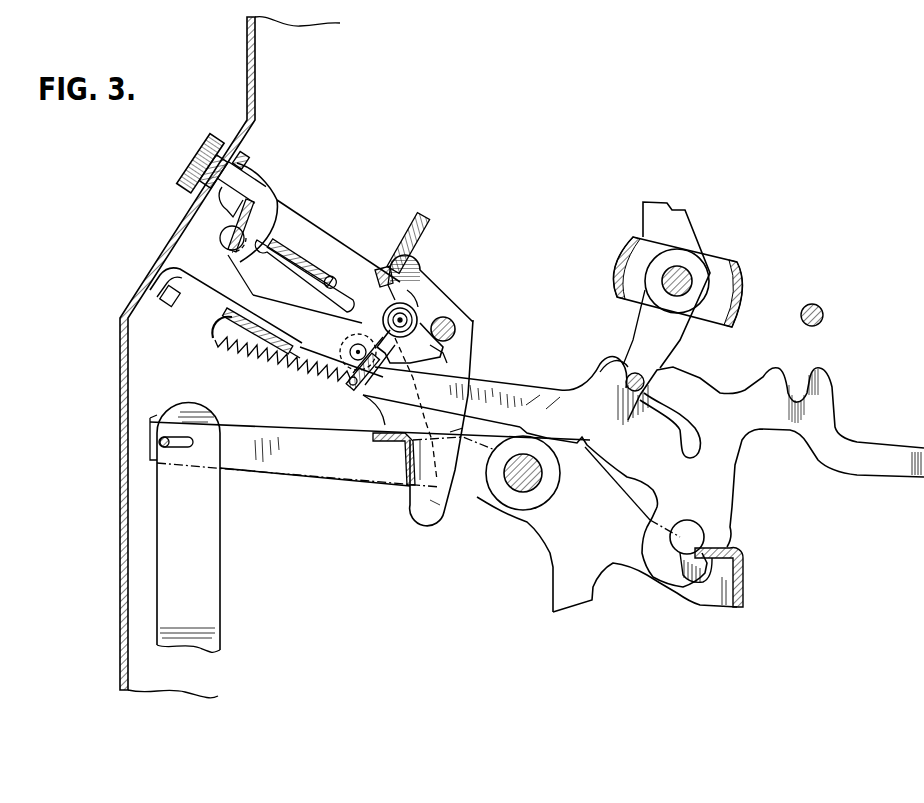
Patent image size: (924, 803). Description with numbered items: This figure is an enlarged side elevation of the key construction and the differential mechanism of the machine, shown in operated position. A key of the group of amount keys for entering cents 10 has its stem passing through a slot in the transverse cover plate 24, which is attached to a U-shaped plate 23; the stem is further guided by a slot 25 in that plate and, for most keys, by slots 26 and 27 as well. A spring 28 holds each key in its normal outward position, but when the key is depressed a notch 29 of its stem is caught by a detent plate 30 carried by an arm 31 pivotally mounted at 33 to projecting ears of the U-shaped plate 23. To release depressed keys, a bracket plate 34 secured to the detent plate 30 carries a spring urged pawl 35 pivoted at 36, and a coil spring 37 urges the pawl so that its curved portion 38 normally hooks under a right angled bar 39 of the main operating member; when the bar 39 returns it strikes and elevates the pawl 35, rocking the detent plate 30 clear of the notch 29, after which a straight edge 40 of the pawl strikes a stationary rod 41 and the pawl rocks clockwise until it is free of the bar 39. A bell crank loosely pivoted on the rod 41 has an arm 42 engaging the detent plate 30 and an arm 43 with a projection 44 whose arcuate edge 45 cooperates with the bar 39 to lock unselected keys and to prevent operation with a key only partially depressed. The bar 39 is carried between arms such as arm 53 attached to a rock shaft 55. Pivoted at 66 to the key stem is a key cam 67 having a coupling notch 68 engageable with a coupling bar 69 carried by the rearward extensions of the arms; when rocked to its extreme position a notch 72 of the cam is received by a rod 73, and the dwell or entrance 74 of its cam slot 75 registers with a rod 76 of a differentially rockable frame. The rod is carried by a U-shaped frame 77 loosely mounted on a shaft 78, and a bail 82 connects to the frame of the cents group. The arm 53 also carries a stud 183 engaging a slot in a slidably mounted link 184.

The group of amount keys for entering cents 10 is at (205, 162).
The U-shaped plate 23 is at (252, 312).
The transverse cover plate 24 is at (170, 252).
The slot 25 is at (297, 367).
The slot 26 is at (252, 168).
The slot 27 is at (202, 292).
The spring 28 is at (255, 369).
The notch 29 is at (333, 274).
The detent plate 30 is at (380, 270).
The arm 31 is at (293, 217).
The pivot 33 is at (222, 236).
The bracket plate 34 is at (370, 300).
The spring urged pawl 35 is at (445, 364).
The pivot 36 is at (415, 318).
The coil spring 37 is at (412, 374).
The curved portion 38 is at (374, 408).
The right angled bar 39 is at (397, 447).
The straight edge 40 is at (450, 350).
The stationary rod 41 is at (452, 327).
The arm 42 is at (424, 285).
The arm 43 is at (470, 433).
The projection 44 is at (428, 521).
The arcuate edge 45 is at (426, 457).
The arm 53 is at (276, 460).
The rock shaft 55 is at (530, 478).
The pivot 66 is at (355, 360).
The key cam 67 is at (513, 393).
The coupling notch 68 is at (690, 526).
The coupling bar 69 is at (737, 551).
The notch 72 is at (797, 392).
The rod 73 is at (814, 307).
The dwell or entrance 74 is at (628, 372).
The cam slot 75 is at (658, 408).
The rod 76 is at (670, 352).
The U-shaped frame 77 is at (615, 271).
The shaft 78 is at (676, 281).
The bail 82 is at (745, 294).
The stud 183 is at (160, 444).
The slidably mounted link 184 is at (197, 562).